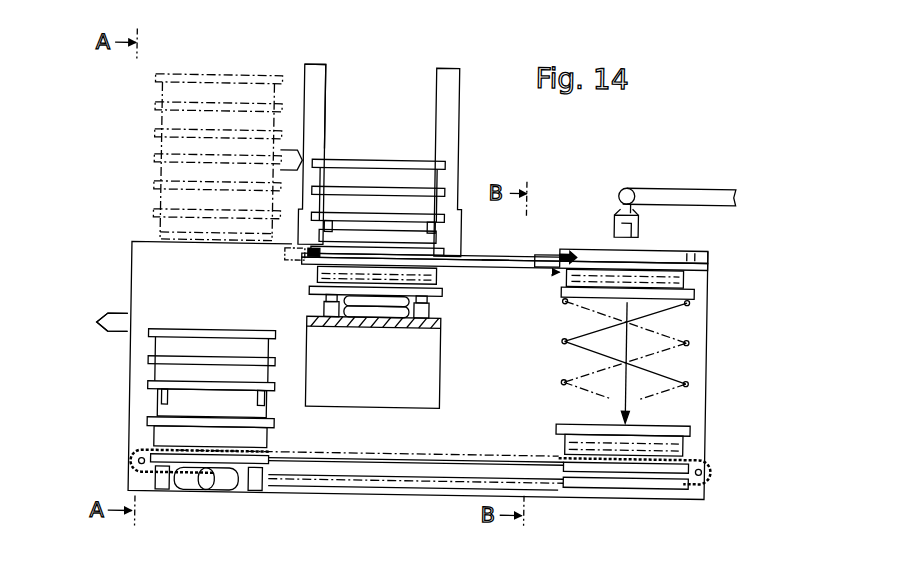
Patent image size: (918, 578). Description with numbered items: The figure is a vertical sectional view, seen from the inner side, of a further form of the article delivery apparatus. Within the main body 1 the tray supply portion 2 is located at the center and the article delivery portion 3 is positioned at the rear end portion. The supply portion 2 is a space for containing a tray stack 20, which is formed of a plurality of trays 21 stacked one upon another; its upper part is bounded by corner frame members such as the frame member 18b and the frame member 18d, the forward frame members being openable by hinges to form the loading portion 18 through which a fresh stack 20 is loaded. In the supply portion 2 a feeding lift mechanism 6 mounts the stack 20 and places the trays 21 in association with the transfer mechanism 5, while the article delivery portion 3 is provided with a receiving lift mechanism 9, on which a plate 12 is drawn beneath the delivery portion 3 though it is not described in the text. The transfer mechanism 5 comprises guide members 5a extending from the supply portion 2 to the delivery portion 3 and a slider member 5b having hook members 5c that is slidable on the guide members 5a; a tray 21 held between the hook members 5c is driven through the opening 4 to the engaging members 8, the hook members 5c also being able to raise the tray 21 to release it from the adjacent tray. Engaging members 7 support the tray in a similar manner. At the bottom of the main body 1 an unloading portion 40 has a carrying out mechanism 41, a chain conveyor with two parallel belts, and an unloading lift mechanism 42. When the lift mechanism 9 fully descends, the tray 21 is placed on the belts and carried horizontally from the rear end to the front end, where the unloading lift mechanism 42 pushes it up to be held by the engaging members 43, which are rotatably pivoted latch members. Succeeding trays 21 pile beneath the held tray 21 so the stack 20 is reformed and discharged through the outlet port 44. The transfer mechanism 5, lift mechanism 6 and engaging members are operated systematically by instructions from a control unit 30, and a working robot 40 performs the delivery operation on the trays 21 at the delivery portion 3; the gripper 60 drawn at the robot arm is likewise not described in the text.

The main body 1 is at (493, 252).
The tray supply portion 2 is at (370, 160).
The article delivery portion 3 is at (678, 244).
The opening 4 is at (453, 257).
The transfer mechanism 5 is at (283, 257).
The guide members 5a is at (493, 269).
The slider member 5b is at (546, 253).
The hook members 5c is at (560, 252).
The feeding lift mechanism 6 is at (439, 291).
The engaging members 7 is at (435, 230).
The engaging members 8 is at (343, 260).
The receiving lift mechanism 9 is at (699, 292).
The plate 12 is at (650, 267).
The loading portion 18 is at (295, 95).
The frame member 18b is at (318, 72).
The frame member 18d is at (431, 78).
The tray stack 20 is at (210, 78).
The tray 21 is at (340, 181).
The control unit 30 is at (435, 388).
The unloading portion 40 is at (679, 184).
The carrying out mechanism 41 is at (382, 481).
The unloading lift mechanism 42 is at (273, 457).
The engaging members 43 is at (158, 404).
The outlet port 44 is at (123, 357).
The gripper 60 is at (616, 229).